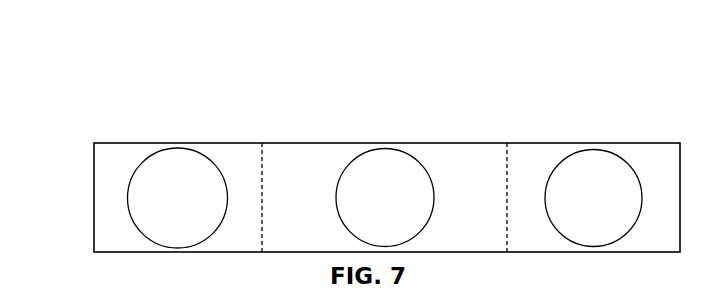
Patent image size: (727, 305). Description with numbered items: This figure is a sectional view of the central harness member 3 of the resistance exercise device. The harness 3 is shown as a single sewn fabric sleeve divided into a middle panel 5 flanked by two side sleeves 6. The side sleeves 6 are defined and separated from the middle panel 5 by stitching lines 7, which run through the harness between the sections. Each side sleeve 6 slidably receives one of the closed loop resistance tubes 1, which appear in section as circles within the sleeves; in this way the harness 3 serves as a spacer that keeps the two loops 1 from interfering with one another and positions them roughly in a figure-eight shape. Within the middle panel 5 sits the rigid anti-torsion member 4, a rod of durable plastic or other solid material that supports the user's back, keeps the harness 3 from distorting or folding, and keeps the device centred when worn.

The central harness member 3 is at (98, 52).
The stitching lines 7 is at (262, 144).
The side sleeves 6 is at (153, 143).
The middle panel 5 is at (375, 143).
The closed loop resistance tubes 1 is at (386, 198).
The rigid anti-torsion member 4 is at (385, 198).